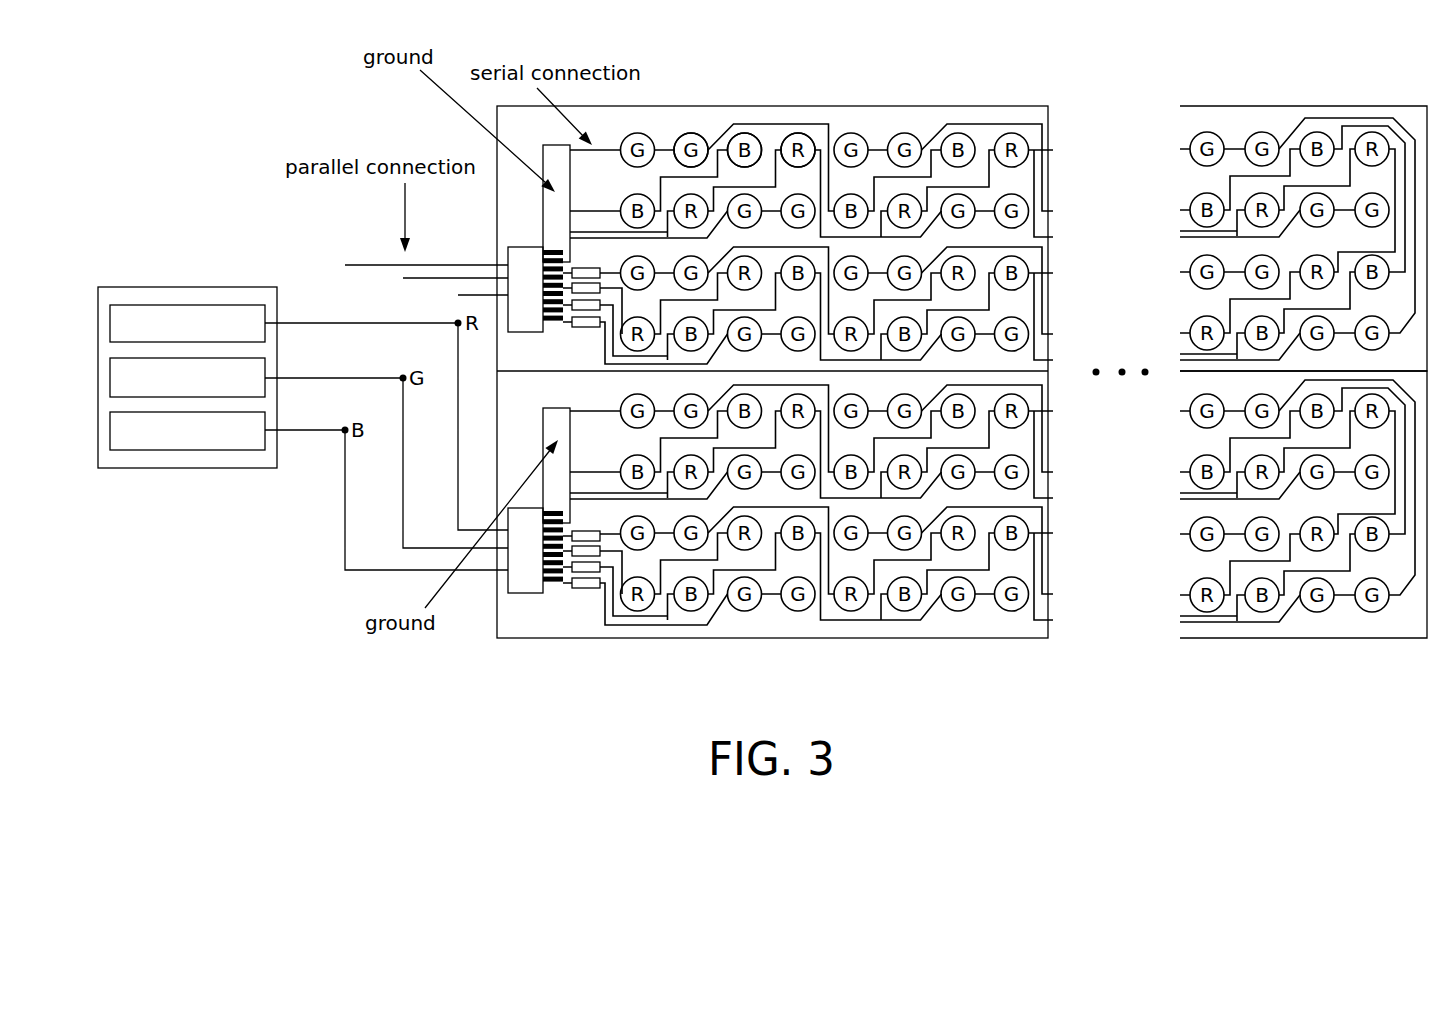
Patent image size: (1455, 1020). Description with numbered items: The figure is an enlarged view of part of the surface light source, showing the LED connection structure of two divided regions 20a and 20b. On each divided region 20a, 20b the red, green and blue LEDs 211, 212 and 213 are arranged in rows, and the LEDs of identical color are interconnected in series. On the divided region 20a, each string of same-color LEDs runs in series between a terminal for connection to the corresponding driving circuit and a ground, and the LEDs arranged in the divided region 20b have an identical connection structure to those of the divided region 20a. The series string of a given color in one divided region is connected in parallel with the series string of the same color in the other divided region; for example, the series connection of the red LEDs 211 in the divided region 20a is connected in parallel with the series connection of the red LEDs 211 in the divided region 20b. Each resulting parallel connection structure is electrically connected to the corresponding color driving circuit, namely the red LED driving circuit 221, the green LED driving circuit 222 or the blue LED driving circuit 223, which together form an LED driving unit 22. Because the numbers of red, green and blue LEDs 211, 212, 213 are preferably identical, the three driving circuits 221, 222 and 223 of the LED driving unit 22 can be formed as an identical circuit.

The LED driving unit 22 is at (180, 290).
The red LED driving circuit 221 is at (233, 306).
The green LED driving circuit 222 is at (263, 366).
The blue LED driving circuit 223 is at (247, 450).
The red LED 211 is at (803, 133).
The green LED 212 is at (693, 133).
The blue LED 213 is at (750, 133).
The divided region 20a is at (1408, 117).
The divided region 20b is at (1400, 627).